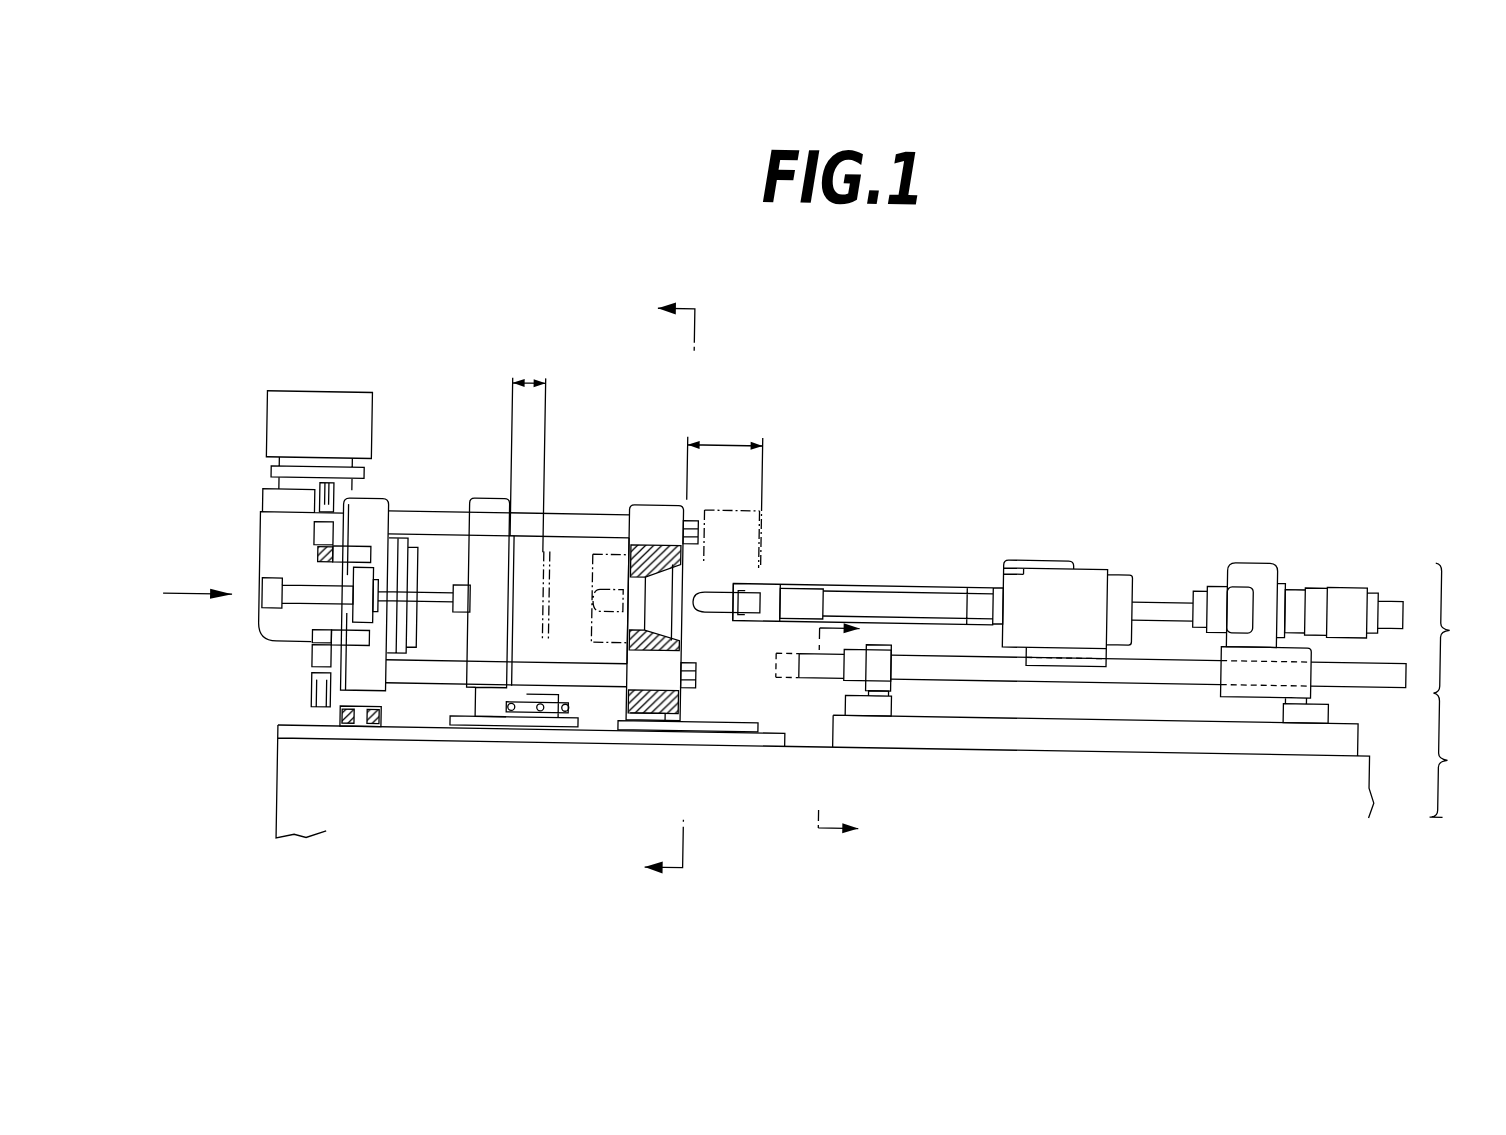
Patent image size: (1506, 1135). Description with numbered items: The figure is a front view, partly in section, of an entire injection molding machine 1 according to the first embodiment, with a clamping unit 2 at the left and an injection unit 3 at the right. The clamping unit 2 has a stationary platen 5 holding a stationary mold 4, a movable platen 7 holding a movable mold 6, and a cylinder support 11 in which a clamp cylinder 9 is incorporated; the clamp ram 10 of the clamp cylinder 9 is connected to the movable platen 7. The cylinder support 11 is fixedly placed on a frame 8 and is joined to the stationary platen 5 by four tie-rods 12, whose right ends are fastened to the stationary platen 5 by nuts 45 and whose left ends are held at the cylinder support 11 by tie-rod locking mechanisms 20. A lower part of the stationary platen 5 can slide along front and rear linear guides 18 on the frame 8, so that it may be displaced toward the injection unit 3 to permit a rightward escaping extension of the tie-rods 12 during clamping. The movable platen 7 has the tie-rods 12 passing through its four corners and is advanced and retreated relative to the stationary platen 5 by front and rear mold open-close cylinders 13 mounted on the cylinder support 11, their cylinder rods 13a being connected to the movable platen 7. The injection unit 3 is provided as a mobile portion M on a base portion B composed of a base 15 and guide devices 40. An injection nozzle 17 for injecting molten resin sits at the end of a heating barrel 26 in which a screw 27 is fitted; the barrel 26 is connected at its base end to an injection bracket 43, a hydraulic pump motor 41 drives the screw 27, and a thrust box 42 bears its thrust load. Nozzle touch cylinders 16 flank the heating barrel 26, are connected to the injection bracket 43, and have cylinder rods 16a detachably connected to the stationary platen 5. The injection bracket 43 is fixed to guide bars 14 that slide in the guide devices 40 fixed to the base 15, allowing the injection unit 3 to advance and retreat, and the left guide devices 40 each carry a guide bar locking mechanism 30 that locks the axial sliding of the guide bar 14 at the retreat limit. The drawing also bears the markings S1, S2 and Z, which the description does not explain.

The injection molding machine 1 is at (1084, 437).
The clamping unit 2 is at (600, 422).
The injection unit 3 is at (998, 520).
The stationary mold 4 is at (600, 548).
The stationary platen 5 is at (648, 499).
The movable mold 6 is at (551, 549).
The movable platen 7 is at (542, 651).
The frame 8 is at (304, 726).
The clamp cylinder 9 is at (318, 474).
The clamp ram 10 is at (412, 568).
The cylinder support 11 is at (257, 530).
The tie-rods 12 is at (607, 675).
The mold open-close cylinders 13 is at (292, 583).
The cylinder rods 13a is at (437, 643).
The guide bars 14 is at (802, 665).
The base 15 is at (1185, 723).
The nozzle touch cylinders 16 is at (902, 578).
The cylinder rods 16a is at (746, 597).
The injection nozzle 17 is at (694, 606).
The linear guides 18 is at (714, 723).
The tie-rod locking mechanisms 20 is at (324, 650).
The heating barrel 26 is at (752, 590).
The screw 27 is at (1162, 593).
The guide bar locking mechanism 30 is at (857, 666).
The guide devices 40 is at (1305, 676).
The hydraulic pump motor 41 is at (1343, 580).
The thrust box 42 is at (1259, 564).
The injection bracket 43 is at (1071, 575).
The nuts 45 is at (695, 663).
The stroke S1 is at (529, 446).
The stroke S2 is at (725, 487).
The Z direction Z is at (184, 592).
The mobile portion M is at (1463, 628).
The base portion B is at (1458, 755).